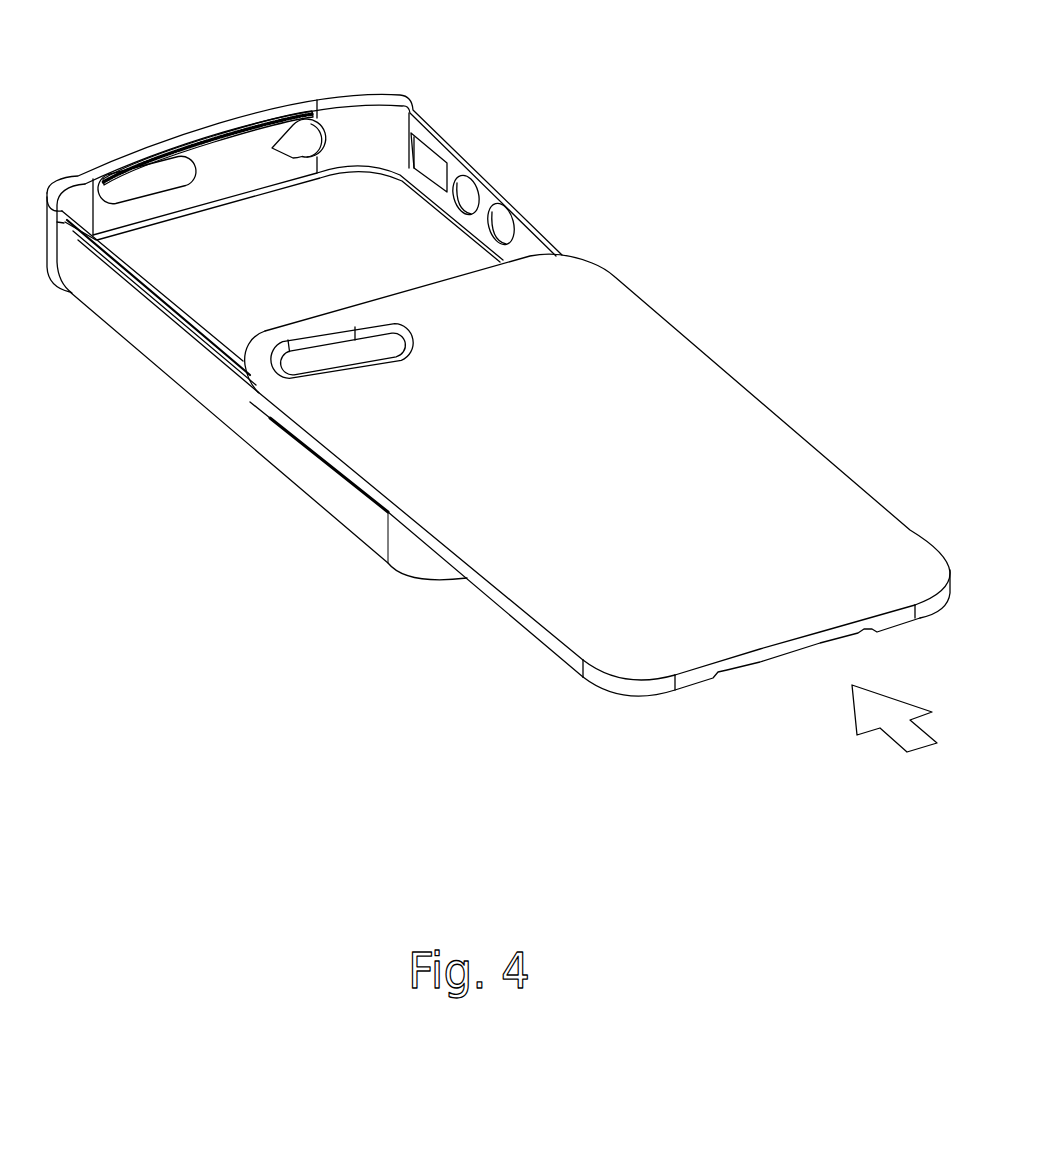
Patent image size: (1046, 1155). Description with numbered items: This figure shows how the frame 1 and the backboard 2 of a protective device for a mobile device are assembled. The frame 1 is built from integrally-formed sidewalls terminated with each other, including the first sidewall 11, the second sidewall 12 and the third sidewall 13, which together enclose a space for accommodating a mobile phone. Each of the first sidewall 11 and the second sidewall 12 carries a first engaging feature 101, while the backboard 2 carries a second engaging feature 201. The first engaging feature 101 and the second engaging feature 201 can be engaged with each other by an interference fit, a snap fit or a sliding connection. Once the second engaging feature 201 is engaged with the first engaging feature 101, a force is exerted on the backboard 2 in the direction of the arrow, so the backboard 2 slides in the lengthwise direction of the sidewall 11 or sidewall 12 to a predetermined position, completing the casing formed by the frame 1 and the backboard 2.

The frame 1 is at (308, 292).
The backboard 2 is at (597, 464).
The first sidewall 11 is at (123, 318).
The second sidewall 12 is at (490, 202).
The third sidewall 13 is at (226, 174).
The first engaging feature 101 is at (212, 352).
The second engaging feature 201 is at (494, 605).